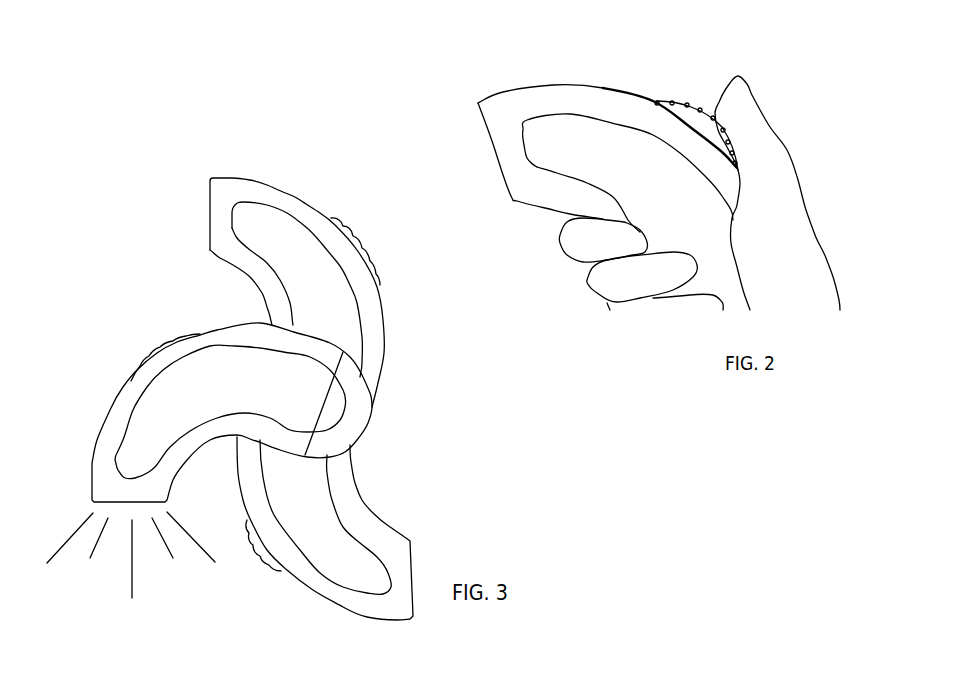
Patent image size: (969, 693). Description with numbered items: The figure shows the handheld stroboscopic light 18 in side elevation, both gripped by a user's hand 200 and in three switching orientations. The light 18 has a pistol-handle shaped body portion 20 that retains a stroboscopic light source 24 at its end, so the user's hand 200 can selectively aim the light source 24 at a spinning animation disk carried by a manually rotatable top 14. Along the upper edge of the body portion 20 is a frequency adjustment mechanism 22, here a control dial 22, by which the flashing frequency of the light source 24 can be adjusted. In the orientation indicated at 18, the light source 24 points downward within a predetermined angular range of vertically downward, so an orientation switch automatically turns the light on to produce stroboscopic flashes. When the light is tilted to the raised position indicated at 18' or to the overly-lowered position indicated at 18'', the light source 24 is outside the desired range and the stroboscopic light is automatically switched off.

In FIG. 2, the manually rotatable top 14 is at (443, 4).
In FIG. 2, the handheld stroboscopic light 18 is at (607, 98).
In FIG. 3, the handheld stroboscopic light 18 is at (239, 460).
In FIG. 3, the raised position of the stroboscopic light 18' is at (318, 292).
In FIG. 3, the overly-lowered position of the stroboscopic light 18'' is at (326, 528).
In FIG. 2, the pistol-handle shaped body portion 20 is at (612, 163).
In FIG. 2, the frequency adjustment mechanism 22 is at (673, 100).
In FIG. 2, the stroboscopic light source 24 is at (497, 161).
In FIG. 2, the user's hand 200 is at (772, 167).